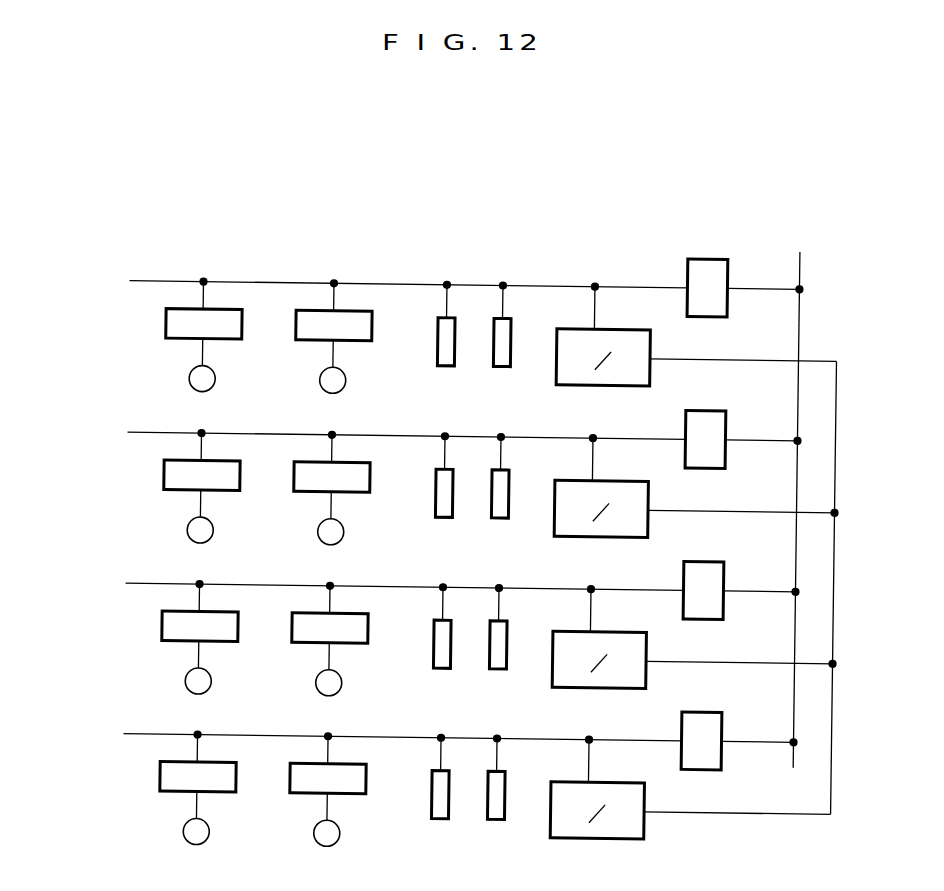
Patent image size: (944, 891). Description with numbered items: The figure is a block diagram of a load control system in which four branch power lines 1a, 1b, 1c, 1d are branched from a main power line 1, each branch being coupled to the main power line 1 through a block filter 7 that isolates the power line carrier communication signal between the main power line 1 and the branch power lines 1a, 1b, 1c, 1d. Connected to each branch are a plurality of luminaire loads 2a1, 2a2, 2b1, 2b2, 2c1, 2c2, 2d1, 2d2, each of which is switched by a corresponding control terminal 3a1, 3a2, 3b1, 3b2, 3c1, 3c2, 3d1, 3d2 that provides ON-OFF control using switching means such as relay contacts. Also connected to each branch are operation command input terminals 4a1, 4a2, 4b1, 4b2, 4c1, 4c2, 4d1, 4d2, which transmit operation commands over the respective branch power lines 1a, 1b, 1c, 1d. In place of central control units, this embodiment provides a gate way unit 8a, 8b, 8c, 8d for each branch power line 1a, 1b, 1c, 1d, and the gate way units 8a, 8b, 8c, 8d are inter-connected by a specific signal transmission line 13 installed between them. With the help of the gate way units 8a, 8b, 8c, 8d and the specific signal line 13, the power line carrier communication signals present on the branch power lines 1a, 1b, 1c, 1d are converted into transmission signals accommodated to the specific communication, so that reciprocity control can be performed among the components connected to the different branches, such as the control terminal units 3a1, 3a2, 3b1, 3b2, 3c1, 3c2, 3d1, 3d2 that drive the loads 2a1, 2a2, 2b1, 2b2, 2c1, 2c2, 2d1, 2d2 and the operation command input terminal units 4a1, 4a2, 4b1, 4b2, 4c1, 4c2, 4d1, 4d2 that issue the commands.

The main power line 1 is at (797, 326).
The specific signal transmission line 13 is at (836, 536).
The block filter 7 is at (723, 270).
The branch power line 1a is at (537, 283).
The luminaire load 2a1 is at (186, 382).
The luminaire load 2a2 is at (319, 383).
The control terminal 3a1 is at (162, 320).
The control terminal 3a2 is at (294, 326).
The operation command input terminal 4a1 is at (434, 345).
The operation command input terminal 4a2 is at (508, 345).
The gate way unit 8a is at (653, 371).
The branch power line 1b is at (547, 435).
The luminaire load 2b1 is at (187, 532).
The luminaire load 2b2 is at (319, 535).
The control terminal 3b1 is at (162, 482).
The control terminal 3b2 is at (293, 480).
The operation command input terminal 4b1 is at (434, 497).
The operation command input terminal 4b2 is at (488, 507).
The gate way unit 8b is at (652, 522).
The branch power line 1c is at (546, 589).
The luminaire load 2c1 is at (187, 684).
The luminaire load 2c2 is at (319, 682).
The control terminal 3c1 is at (163, 634).
The control terminal 3c2 is at (293, 632).
The operation command input terminal 4c1 is at (435, 648).
The operation command input terminal 4c2 is at (488, 657).
The gate way unit 8c is at (652, 674).
The branch power line 1d is at (542, 737).
The luminaire load 2d1 is at (188, 834).
The luminaire load 2d2 is at (319, 833).
The control terminal 3d1 is at (163, 784).
The control terminal 3d2 is at (293, 782).
The operation command input terminal 4d1 is at (435, 807).
The operation command input terminal 4d2 is at (491, 802).
The gate way unit 8d is at (652, 823).